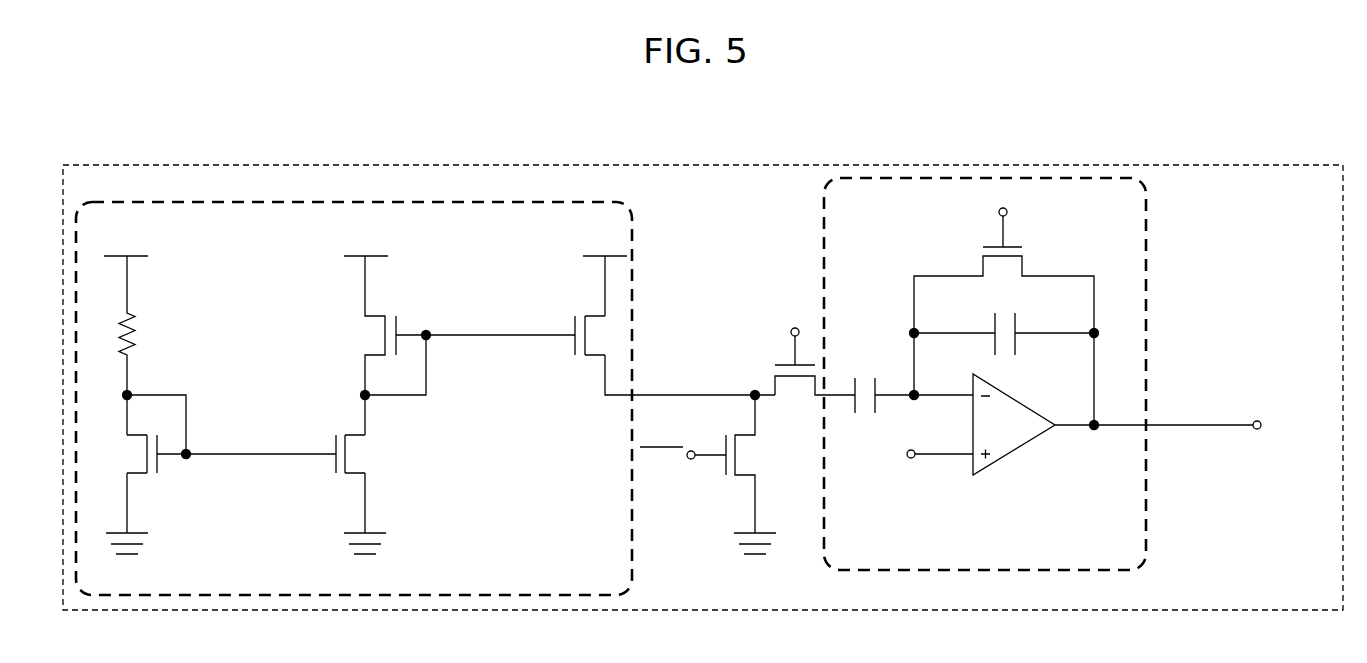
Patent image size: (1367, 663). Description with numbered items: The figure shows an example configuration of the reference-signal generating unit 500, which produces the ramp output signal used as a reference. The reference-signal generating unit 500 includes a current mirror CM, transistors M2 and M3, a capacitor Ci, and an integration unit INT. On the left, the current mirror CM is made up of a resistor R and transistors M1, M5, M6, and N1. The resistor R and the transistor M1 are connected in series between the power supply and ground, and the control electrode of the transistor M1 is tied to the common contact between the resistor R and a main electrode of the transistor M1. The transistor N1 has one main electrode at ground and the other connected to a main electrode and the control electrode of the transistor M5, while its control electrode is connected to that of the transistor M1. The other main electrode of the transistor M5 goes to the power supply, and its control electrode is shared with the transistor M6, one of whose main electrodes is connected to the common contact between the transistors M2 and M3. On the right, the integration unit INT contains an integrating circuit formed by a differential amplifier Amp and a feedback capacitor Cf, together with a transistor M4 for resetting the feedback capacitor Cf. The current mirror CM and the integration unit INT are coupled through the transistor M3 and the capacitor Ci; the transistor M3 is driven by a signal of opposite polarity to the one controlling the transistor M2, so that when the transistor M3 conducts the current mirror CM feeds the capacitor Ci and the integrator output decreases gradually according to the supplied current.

The reference-signal generating unit 500 is at (82, 165).
The current mirror CM is at (354, 398).
The integration unit INT is at (985, 374).
The resistor R is at (136, 325).
The transistor M1 is at (221, 473).
The transistor N1 is at (347, 474).
The transistor M5 is at (468, 328).
The transistor M6 is at (665, 325).
The transistor M3 is at (803, 361).
The transistor M2 is at (708, 474).
The transistor M4 is at (1004, 305).
The capacitor Ci is at (914, 383).
The feedback capacitor Cf is at (1004, 323).
The differential amplifier Amp is at (1095, 424).